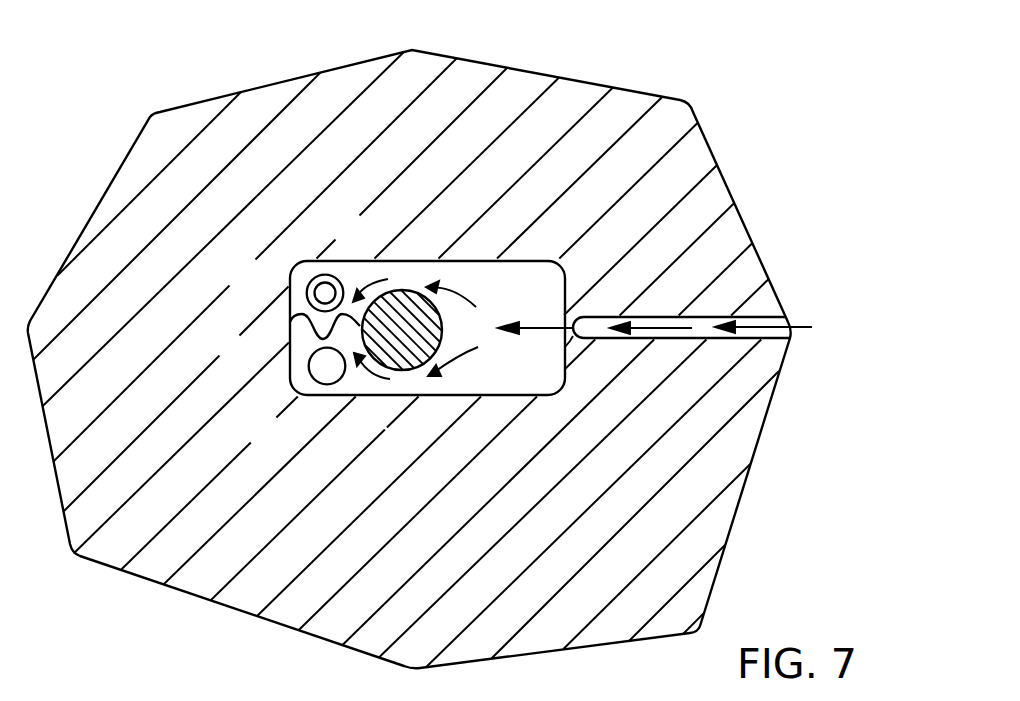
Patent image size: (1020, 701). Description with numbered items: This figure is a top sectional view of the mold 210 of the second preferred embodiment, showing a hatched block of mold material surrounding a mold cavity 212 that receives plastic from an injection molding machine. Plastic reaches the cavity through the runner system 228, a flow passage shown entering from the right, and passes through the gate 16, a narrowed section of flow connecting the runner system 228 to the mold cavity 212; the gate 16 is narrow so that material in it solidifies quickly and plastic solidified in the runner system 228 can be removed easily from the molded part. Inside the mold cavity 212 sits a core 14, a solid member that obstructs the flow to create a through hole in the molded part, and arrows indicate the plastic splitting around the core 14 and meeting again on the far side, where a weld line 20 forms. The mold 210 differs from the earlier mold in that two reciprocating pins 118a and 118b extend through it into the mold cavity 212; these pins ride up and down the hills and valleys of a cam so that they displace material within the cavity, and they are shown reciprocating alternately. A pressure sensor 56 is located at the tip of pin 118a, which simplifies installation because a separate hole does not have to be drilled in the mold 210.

The mold 210 is at (702, 126).
The mold cavity 212 is at (534, 305).
The core 14 is at (401, 370).
The pressure sensor 56 is at (326, 291).
The reciprocating pin 118a is at (290, 279).
The reciprocating pin 118b is at (316, 381).
The weld line 20 is at (290, 340).
The gate 16 is at (565, 347).
The runner system 228 is at (728, 338).